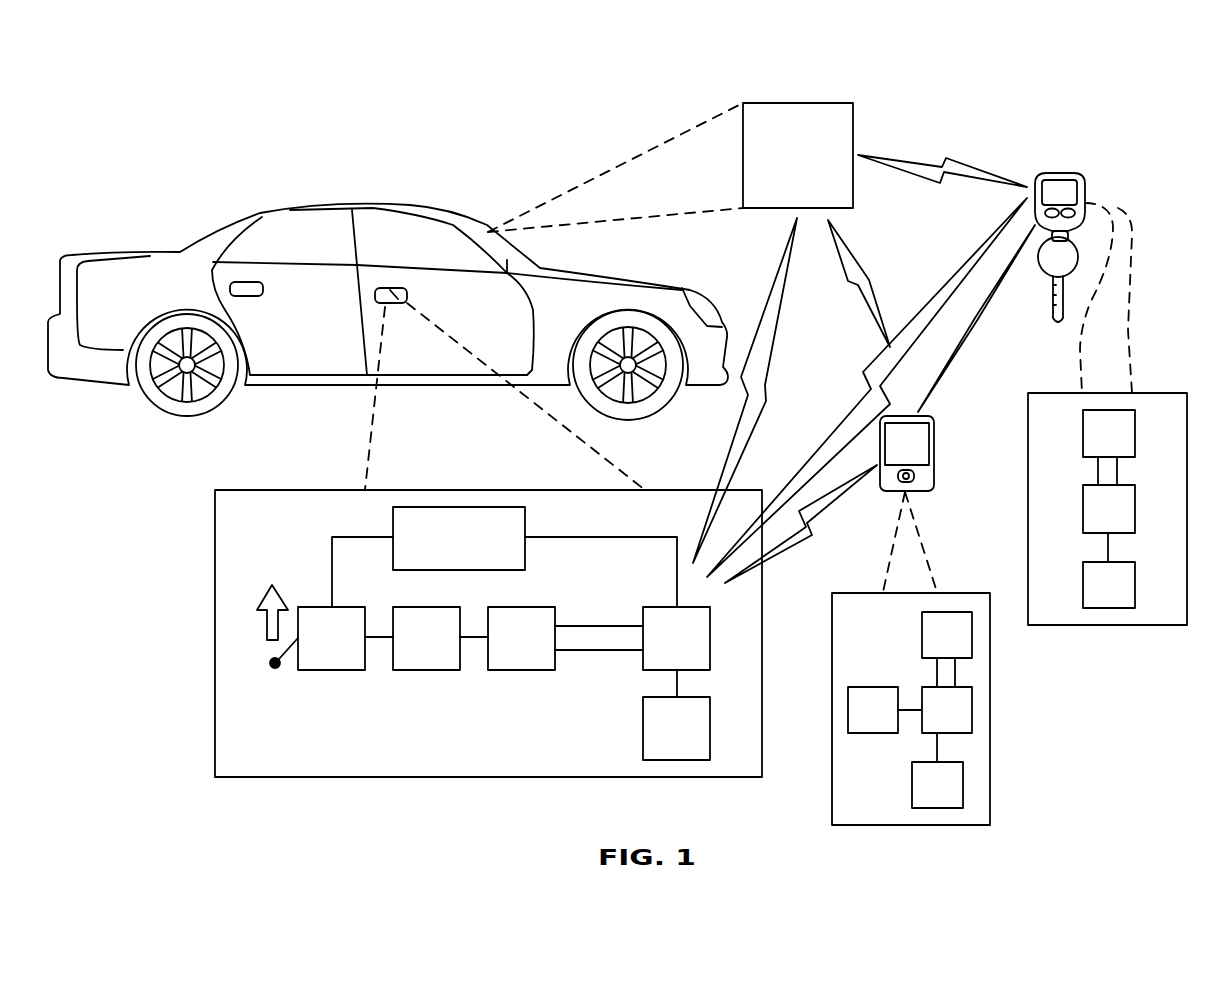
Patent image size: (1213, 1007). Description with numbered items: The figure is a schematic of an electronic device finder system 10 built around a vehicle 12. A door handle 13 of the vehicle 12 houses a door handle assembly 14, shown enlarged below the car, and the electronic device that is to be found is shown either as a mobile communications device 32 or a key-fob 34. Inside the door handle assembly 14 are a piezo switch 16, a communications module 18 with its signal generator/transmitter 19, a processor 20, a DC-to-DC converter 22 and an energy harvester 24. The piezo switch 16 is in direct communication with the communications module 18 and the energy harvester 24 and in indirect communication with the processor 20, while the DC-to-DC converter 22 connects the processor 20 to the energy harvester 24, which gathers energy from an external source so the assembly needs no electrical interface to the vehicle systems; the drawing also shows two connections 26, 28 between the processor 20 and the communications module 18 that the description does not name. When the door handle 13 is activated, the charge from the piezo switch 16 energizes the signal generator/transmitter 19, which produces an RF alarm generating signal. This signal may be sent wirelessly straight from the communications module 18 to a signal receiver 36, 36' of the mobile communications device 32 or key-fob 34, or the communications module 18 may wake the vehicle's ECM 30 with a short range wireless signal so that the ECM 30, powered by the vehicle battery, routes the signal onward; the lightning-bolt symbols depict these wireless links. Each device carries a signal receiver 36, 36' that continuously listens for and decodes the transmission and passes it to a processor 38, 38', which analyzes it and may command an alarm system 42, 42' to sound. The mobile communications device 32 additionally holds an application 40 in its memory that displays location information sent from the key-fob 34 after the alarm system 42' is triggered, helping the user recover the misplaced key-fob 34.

The electronic device finder system 10 is at (166, 106).
The vehicle 12 is at (343, 203).
The door handle 13 is at (400, 288).
The door handle assembly 14 is at (215, 632).
The piezo switch 16 is at (451, 551).
The communications module 18 is at (669, 651).
The signal generator/transmitter 19 is at (669, 741).
The processor 20 is at (513, 651).
The DC-to-DC converter 22 is at (418, 651).
The energy harvester 24 is at (323, 651).
The first connection line 26 is at (597, 624).
The second connection line 28 is at (597, 652).
The ECM 30 is at (790, 173).
The mobile communications device 32 is at (935, 451).
The key-fob 34 is at (1060, 173).
The signal receiver 36 is at (947, 635).
The processor 38 is at (947, 710).
The application 40 is at (865, 725).
The alarm system 42 is at (937, 785).
The signal receiver 36' is at (1109, 433).
The processor 38' is at (1109, 509).
The alarm system 42' is at (1109, 585).